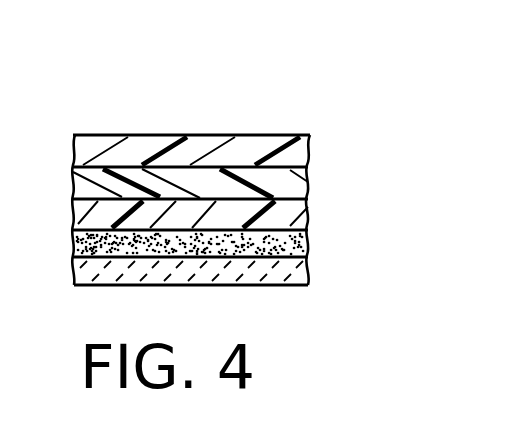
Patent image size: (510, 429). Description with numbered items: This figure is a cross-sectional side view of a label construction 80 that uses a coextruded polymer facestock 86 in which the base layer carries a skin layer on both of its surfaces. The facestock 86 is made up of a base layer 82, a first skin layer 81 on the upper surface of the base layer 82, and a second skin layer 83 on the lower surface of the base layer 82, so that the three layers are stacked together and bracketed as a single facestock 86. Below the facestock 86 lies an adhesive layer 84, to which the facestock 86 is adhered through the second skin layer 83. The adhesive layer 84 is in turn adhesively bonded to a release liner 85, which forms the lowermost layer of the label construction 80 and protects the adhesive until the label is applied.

The label construction 80 is at (277, 125).
The first skin layer 81 is at (314, 153).
The base layer 82 is at (313, 186).
The second skin layer 83 is at (313, 218).
The adhesive layer 84 is at (310, 248).
The release liner 85 is at (317, 278).
The facestock 86 is at (62, 133).